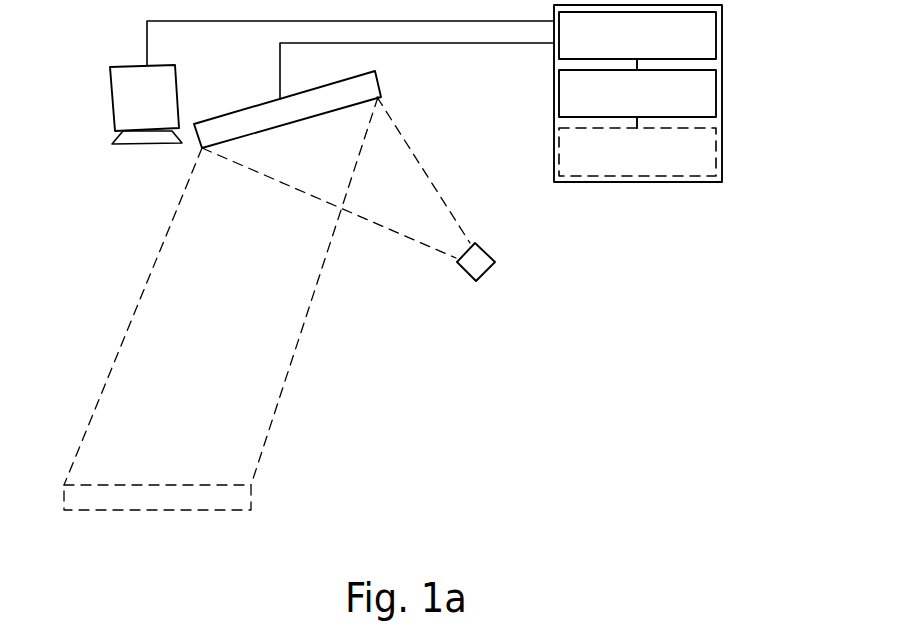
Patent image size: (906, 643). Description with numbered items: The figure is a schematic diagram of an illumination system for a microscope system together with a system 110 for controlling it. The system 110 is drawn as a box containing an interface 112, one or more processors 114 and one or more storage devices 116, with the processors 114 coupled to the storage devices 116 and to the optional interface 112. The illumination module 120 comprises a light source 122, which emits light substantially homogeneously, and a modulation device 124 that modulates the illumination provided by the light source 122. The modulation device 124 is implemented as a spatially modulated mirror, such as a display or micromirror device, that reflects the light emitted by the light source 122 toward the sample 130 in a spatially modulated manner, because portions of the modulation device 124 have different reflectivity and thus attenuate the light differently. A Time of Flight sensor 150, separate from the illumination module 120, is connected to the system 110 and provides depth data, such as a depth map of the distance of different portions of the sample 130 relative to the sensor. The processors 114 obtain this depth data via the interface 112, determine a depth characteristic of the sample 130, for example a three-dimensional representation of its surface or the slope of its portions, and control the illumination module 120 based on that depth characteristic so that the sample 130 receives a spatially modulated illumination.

The system 110 is at (645, 182).
The interface 112 is at (682, 52).
The one or more processors 114 is at (716, 107).
The one or more storage devices 116 is at (716, 152).
The illumination module 120 is at (103, 238).
The light source 122 is at (492, 270).
The modulation device 124 is at (378, 76).
The sample 130 is at (251, 510).
The Time of Flight sensor 150 is at (177, 72).